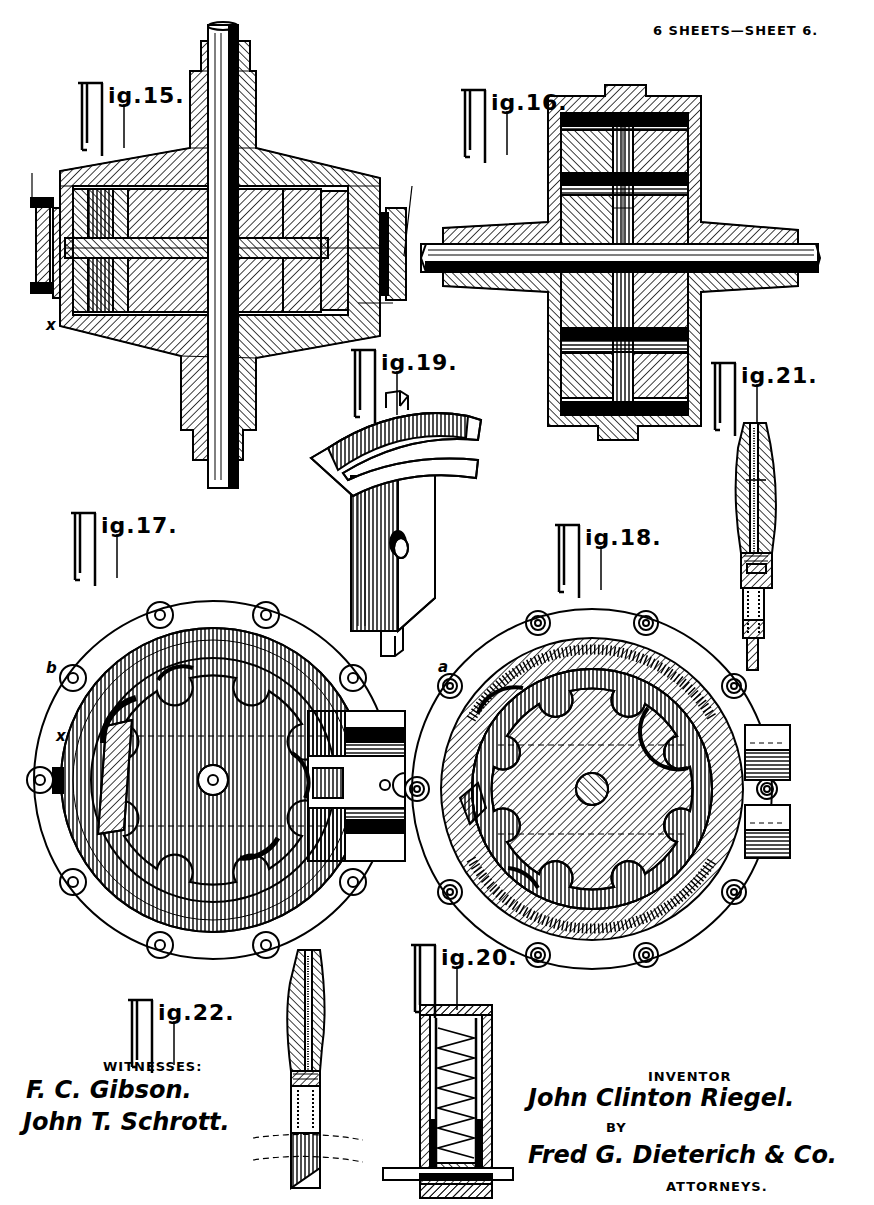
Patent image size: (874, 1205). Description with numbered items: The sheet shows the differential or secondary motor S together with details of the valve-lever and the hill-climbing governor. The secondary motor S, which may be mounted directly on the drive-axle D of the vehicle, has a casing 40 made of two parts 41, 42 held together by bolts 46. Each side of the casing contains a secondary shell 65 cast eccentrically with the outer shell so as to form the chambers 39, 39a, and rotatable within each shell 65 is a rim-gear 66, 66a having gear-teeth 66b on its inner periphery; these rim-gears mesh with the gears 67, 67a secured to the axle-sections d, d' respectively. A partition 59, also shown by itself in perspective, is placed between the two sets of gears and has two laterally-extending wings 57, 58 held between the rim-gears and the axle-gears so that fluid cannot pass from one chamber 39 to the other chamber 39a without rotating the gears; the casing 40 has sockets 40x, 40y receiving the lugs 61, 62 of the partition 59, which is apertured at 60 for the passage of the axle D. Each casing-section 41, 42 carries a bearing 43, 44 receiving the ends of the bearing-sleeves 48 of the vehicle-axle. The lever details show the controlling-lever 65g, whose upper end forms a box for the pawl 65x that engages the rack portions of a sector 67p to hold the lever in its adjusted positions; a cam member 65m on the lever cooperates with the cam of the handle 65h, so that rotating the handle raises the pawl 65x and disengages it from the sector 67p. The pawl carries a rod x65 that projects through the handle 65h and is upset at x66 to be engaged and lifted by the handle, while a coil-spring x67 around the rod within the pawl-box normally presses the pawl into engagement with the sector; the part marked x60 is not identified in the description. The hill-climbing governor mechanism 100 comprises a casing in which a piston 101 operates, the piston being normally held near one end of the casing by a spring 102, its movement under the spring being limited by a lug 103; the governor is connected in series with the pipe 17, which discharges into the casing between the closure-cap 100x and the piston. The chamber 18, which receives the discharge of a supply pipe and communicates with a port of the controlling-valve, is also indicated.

In FIG. 15, the pipe 17 is at (225, 206).
In FIG. 20, the pipe 17 is at (380, 1160).
In FIG. 15, the chamber 18 is at (220, 302).
In FIG. 17, the chamber 39 is at (201, 673).
In FIG. 18, the chamber 39 is at (615, 731).
In FIG. 17, the chamber 39a is at (204, 883).
In FIG. 18, the chamber 39a is at (594, 887).
In FIG. 15, the casing 40 is at (207, 250).
In FIG. 16, the casing 40 is at (620, 262).
In FIG. 17, the casing 40 is at (50, 762).
In FIG. 18, the casing 40 is at (592, 789).
In FIG. 15, the socket 40x is at (343, 250).
In FIG. 17, the socket 40y is at (328, 778).
In FIG. 18, the socket 40y is at (767, 791).
In FIG. 15, the casing part 41 is at (137, 160).
In FIG. 16, the casing part 41 is at (688, 176).
In FIG. 17, the casing part 41 is at (177, 603).
In FIG. 15, the casing part 42 is at (165, 333).
In FIG. 16, the casing part 42 is at (548, 178).
In FIG. 18, the casing part 42 is at (592, 608).
In FIG. 15, the bearing 43 is at (250, 83).
In FIG. 16, the bearing 43 is at (718, 222).
In FIG. 15, the bearing 44 is at (173, 390).
In FIG. 16, the bearing 44 is at (462, 222).
In FIG. 15, the bolts 46 is at (36, 190).
In FIG. 18, the bolts 46 is at (652, 616).
In FIG. 15, the bearing-sleeves 48 is at (243, 52).
In FIG. 16, the bearing-sleeves 48 is at (428, 230).
In FIG. 15, the wing 57 is at (118, 307).
In FIG. 19, the wing 57 is at (440, 448).
In FIG. 18, the wing 57 is at (473, 803).
In FIG. 15, the wing 58 is at (158, 201).
In FIG. 19, the wing 58 is at (310, 452).
In FIG. 17, the wing 58 is at (120, 768).
In FIG. 15, the partition 59 is at (222, 248).
In FIG. 16, the partition 59 is at (626, 207).
In FIG. 19, the partition 59 is at (410, 547).
In FIG. 18, the partition 59 is at (567, 781).
In FIG. 19, the aperture 60 is at (398, 556).
In FIG. 19, the lug 61 is at (398, 386).
In FIG. 19, the lug 62 is at (396, 634).
In FIG. 16, the secondary shell 65 is at (582, 105).
In FIG. 17, the secondary shell 65 is at (262, 650).
In FIG. 18, the secondary shell 65 is at (680, 940).
In FIG. 21, the controlling-lever 65g is at (751, 650).
In FIG. 22, the controlling-lever 65g is at (284, 1160).
In FIG. 21, the handle 65h is at (738, 478).
In FIG. 22, the handle 65h is at (314, 990).
In FIG. 21, the cam member 65m is at (764, 540).
In FIG. 22, the cam member 65m is at (313, 1062).
In FIG. 21, the pawl 65x is at (757, 601).
In FIG. 22, the pawl 65x is at (313, 1100).
In FIG. 15, the rim-gear 66 is at (72, 180).
In FIG. 16, the rim-gear 66 is at (683, 150).
In FIG. 17, the rim-gear 66 is at (88, 735).
In FIG. 18, the rim-gear 66 is at (470, 700).
In FIG. 15, the rim-gear 66a is at (65, 305).
In FIG. 16, the rim-gear 66a is at (560, 355).
In FIG. 18, the rim-gear 66a is at (583, 787).
In FIG. 15, the gear-teeth 66b is at (100, 305).
In FIG. 16, the gear-teeth 66b is at (680, 326).
In FIG. 15, the gear 67 is at (205, 213).
In FIG. 16, the gear 67 is at (660, 261).
In FIG. 17, the gear 67 is at (218, 779).
In FIG. 15, the gear 67a is at (205, 285).
In FIG. 16, the gear 67a is at (587, 261).
In FIG. 18, the gear 67a is at (592, 789).
In FIG. 21, the sector 67p is at (757, 625).
In FIG. 22, the sector 67p is at (282, 1135).
In FIG. 20, the hill-climbing governor mechanism 100 is at (485, 1030).
In FIG. 20, the closure-cap 100x is at (412, 1185).
In FIG. 20, the piston 101 is at (478, 1125).
In FIG. 20, the spring 102 is at (460, 1000).
In FIG. 20, the lug 103 is at (478, 1150).
In FIG. 15, the drive-axle D is at (230, 460).
In FIG. 16, the drive-axle D is at (745, 236).
In FIG. 17, the drive-axle D is at (216, 768).
In FIG. 15, the axle-section d is at (257, 37).
In FIG. 16, the axle-section d is at (804, 224).
In FIG. 17, the axle-section d is at (188, 799).
In FIG. 18, the axle-section d is at (576, 810).
In FIG. 15, the axle-section d' is at (181, 475).
In FIG. 16, the axle-section d' is at (427, 292).
In FIG. 15, the secondary motor S is at (301, 125).
In FIG. 16, the secondary motor S is at (735, 109).
In FIG. 17, the secondary motor S is at (231, 569).
In FIG. 18, the secondary motor S is at (658, 593).
In FIG. 21, the pin x60 is at (756, 472).
In FIG. 22, the rod x65 is at (284, 986).
In FIG. 21, the upset portion x66 is at (750, 416).
In FIG. 22, the upset portion x66 is at (305, 942).
In FIG. 21, the coil-spring x67 is at (760, 560).
In FIG. 22, the coil-spring x67 is at (284, 1068).